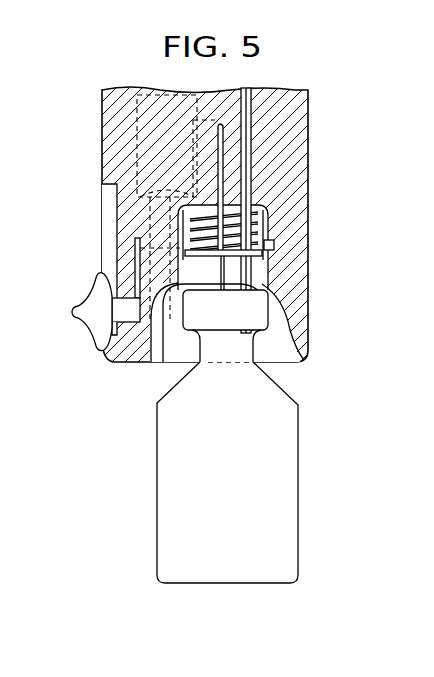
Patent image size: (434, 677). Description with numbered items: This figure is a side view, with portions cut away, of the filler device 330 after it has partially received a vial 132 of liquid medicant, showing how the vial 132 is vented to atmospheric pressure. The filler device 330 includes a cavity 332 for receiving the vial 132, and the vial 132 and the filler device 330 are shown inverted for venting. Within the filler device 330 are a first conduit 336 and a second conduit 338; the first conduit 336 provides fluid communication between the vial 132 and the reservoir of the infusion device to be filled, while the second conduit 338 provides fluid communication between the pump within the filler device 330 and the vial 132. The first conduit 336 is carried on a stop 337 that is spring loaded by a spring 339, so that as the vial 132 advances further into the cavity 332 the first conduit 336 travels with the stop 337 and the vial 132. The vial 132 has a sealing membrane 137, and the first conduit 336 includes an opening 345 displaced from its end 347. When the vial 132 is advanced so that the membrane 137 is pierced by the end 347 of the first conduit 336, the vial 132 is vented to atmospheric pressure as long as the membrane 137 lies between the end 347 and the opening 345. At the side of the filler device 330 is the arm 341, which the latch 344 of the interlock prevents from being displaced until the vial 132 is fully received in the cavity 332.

The filler device 330 is at (85, 192).
The cavity 332 is at (283, 313).
The first conduit 336 is at (252, 172).
The stop 337 is at (272, 260).
The second conduit 338 is at (224, 145).
The spring 339 is at (252, 212).
The arm 341 is at (80, 295).
The latch 344 is at (137, 258).
The opening 345 is at (270, 283).
The end 347 is at (260, 337).
The sealing membrane 137 is at (166, 366).
The vial 132 is at (163, 447).